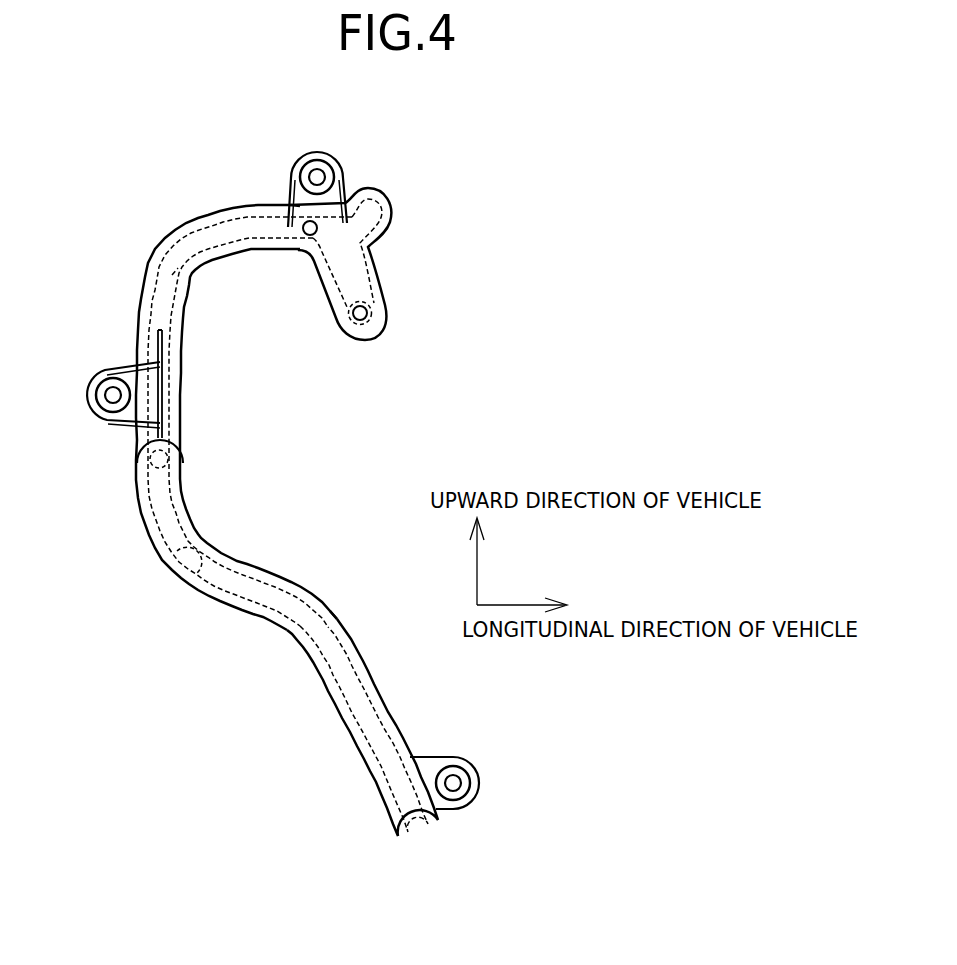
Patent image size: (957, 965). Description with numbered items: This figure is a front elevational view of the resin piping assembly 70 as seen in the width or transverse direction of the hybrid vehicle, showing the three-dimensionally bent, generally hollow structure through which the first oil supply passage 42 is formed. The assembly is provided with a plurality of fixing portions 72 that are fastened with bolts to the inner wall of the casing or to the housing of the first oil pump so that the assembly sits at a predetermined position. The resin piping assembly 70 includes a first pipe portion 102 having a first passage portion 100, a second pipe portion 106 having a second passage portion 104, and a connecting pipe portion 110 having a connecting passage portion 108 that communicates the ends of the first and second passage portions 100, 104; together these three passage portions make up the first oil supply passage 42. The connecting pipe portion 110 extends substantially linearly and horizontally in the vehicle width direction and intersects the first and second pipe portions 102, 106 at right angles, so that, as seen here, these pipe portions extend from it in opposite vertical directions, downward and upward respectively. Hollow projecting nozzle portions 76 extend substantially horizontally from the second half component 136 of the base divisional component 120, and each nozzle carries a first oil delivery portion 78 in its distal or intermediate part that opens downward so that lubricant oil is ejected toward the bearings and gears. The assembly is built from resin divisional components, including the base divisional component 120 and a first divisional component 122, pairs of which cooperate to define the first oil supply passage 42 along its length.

The first oil supply passage 42 is at (348, 626).
The resin piping assembly 70 is at (453, 200).
The fixing portions 72 is at (316, 160).
The projecting nozzle portions 76 is at (291, 226).
The first oil delivery portion 78 is at (310, 236).
The first passage portion 100 is at (173, 550).
The first pipe portion 102 is at (308, 745).
The second passage portion 104 is at (184, 278).
The second pipe portion 106 is at (215, 193).
The connecting passage portion 108 is at (182, 448).
The connecting pipe portion 110 is at (128, 472).
The base divisional component 120 is at (178, 403).
The first divisional component 122 is at (350, 690).
The second half component 136 is at (186, 256).